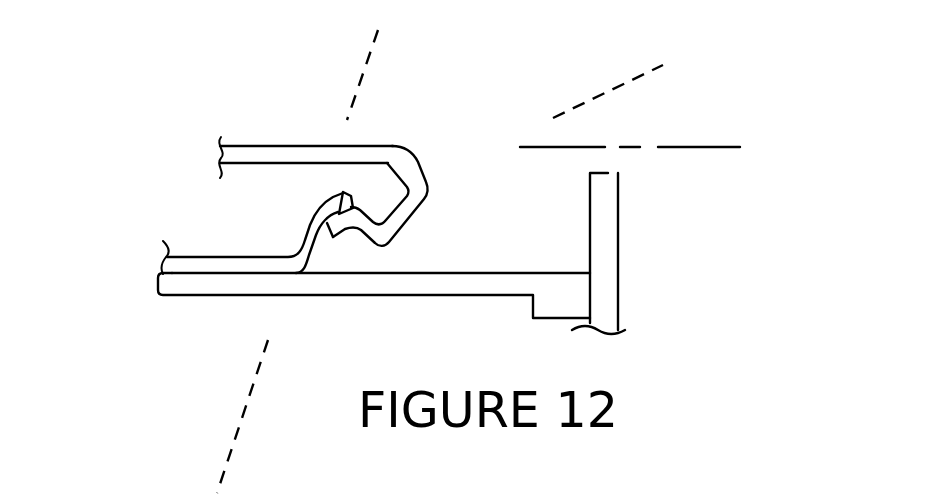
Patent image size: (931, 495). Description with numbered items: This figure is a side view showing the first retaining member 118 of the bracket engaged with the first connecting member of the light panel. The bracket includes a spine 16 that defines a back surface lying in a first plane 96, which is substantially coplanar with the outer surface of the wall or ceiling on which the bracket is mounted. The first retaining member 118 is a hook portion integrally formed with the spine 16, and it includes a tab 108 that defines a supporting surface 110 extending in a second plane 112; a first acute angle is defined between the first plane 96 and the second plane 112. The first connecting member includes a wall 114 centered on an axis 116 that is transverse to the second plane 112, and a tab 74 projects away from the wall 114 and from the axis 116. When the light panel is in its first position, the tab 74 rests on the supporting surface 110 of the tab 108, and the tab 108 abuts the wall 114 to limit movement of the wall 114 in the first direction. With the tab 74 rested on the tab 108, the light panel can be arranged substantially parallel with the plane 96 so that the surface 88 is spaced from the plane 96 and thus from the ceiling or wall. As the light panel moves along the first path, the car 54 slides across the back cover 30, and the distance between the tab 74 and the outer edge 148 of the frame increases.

The spine 16 is at (233, 155).
The back cover 30 is at (356, 322).
The car 54 is at (191, 263).
The tab 74 is at (333, 203).
The surface 88 is at (657, 247).
The first plane 96 is at (688, 147).
The tab 108 is at (338, 230).
The supporting surface 110 is at (343, 193).
The second plane 112 is at (585, 100).
The wall 114 is at (300, 245).
The axis 116 is at (230, 457).
The first retaining member 118 is at (424, 122).
The outer edge 148 is at (618, 238).